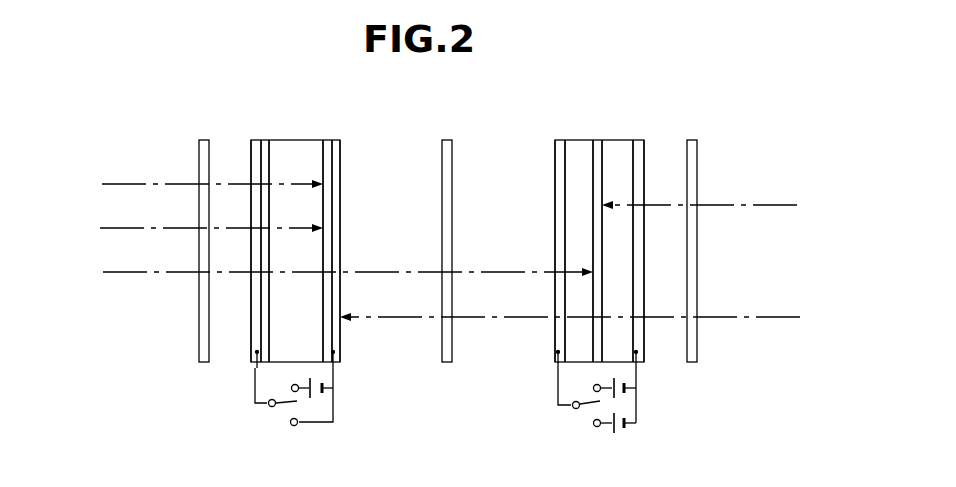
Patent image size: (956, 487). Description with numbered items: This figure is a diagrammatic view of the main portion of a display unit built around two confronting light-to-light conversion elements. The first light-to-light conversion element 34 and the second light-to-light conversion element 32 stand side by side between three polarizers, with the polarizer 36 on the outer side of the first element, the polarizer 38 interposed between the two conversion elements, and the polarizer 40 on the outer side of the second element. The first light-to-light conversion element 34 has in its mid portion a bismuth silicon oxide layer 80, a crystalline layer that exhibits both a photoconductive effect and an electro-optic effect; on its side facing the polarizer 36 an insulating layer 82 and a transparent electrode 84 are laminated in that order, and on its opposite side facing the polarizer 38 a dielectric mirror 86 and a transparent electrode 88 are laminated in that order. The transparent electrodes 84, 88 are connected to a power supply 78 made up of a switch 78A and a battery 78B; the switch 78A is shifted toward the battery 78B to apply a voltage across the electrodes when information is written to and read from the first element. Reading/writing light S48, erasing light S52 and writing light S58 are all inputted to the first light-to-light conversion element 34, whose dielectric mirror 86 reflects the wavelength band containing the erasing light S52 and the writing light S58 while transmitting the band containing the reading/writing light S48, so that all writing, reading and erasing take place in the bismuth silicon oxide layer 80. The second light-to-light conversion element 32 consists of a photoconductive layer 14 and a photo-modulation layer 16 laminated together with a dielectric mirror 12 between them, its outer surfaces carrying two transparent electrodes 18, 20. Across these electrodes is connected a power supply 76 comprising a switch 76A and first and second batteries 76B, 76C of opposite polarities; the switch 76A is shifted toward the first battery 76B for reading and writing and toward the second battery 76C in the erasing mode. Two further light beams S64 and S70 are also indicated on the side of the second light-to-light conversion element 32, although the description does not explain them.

The dielectric mirror 12 is at (599, 142).
The photoconductive layer 14 is at (583, 148).
The photo-modulation layer 16 is at (620, 142).
The transparent electrode 18 is at (555, 170).
The transparent electrode 20 is at (640, 159).
The second light-to-light conversion element 32 is at (592, 227).
The first light-to-light conversion element 34 is at (297, 227).
The polarizer 36 is at (200, 152).
The polarizer 38 is at (442, 152).
The polarizer 40 is at (698, 146).
The power supply 76 is at (603, 415).
The switch 76A is at (582, 414).
The first battery 76B is at (626, 380).
The second battery 76C is at (616, 436).
The power supply 78 is at (296, 414).
The switch 78A is at (278, 415).
The battery 78B is at (322, 378).
The bismuth silicon oxide layer 80 is at (293, 148).
The insulating layer 82 is at (265, 148).
The transparent electrode 84 is at (252, 148).
The dielectric mirror 86 is at (328, 148).
The transparent electrode 88 is at (340, 153).
The reading/writing light S48 is at (110, 272).
The erasing light S52 is at (108, 228).
The writing light S58 is at (110, 184).
The light beam S64 is at (775, 316).
The light beam S70 is at (780, 206).